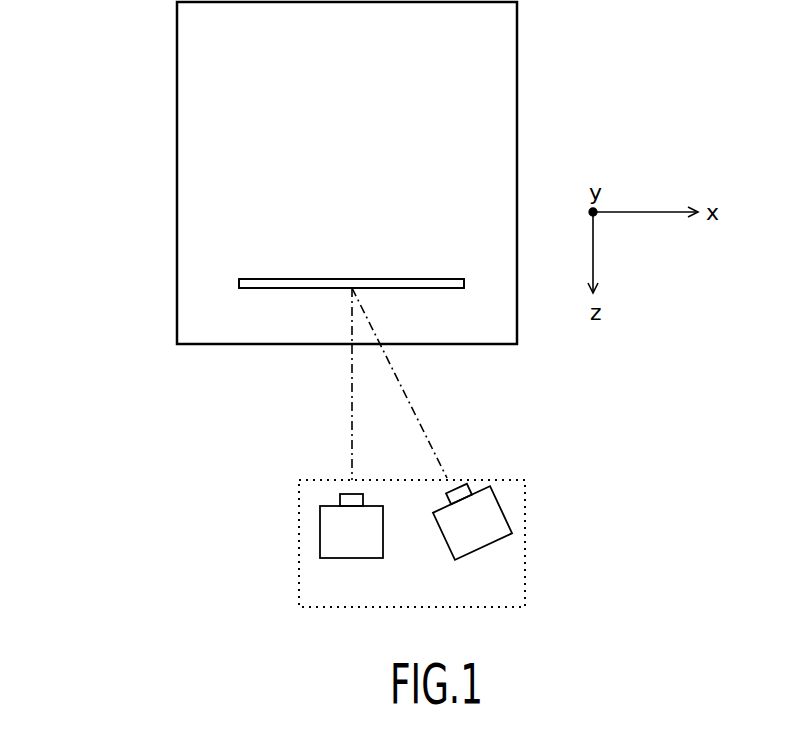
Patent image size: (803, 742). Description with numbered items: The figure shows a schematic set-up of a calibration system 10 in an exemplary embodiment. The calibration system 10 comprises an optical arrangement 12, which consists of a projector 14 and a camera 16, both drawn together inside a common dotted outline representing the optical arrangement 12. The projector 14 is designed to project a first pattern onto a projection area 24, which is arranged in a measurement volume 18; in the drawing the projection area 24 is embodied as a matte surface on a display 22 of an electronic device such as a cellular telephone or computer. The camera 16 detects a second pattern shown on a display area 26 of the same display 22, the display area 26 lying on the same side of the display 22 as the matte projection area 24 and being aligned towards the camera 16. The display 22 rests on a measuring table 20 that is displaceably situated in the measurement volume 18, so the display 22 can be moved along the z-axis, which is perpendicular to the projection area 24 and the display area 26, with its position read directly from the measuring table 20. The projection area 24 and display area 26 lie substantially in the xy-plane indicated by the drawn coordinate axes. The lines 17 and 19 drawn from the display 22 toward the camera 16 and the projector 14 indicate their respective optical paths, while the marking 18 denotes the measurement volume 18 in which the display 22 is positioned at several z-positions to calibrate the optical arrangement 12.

The calibration system 10 is at (124, 283).
The optical arrangement 12 is at (525, 500).
The projector 14 is at (472, 525).
The camera 16 is at (351, 531).
The first measurement beam 17 is at (352, 385).
The measurement volume 18 is at (289, 404).
The second measurement beam 19 is at (401, 385).
The measuring table 20 is at (517, 172).
The display 22 is at (314, 278).
The projection area 24 is at (341, 308).
The display area 26 is at (298, 290).